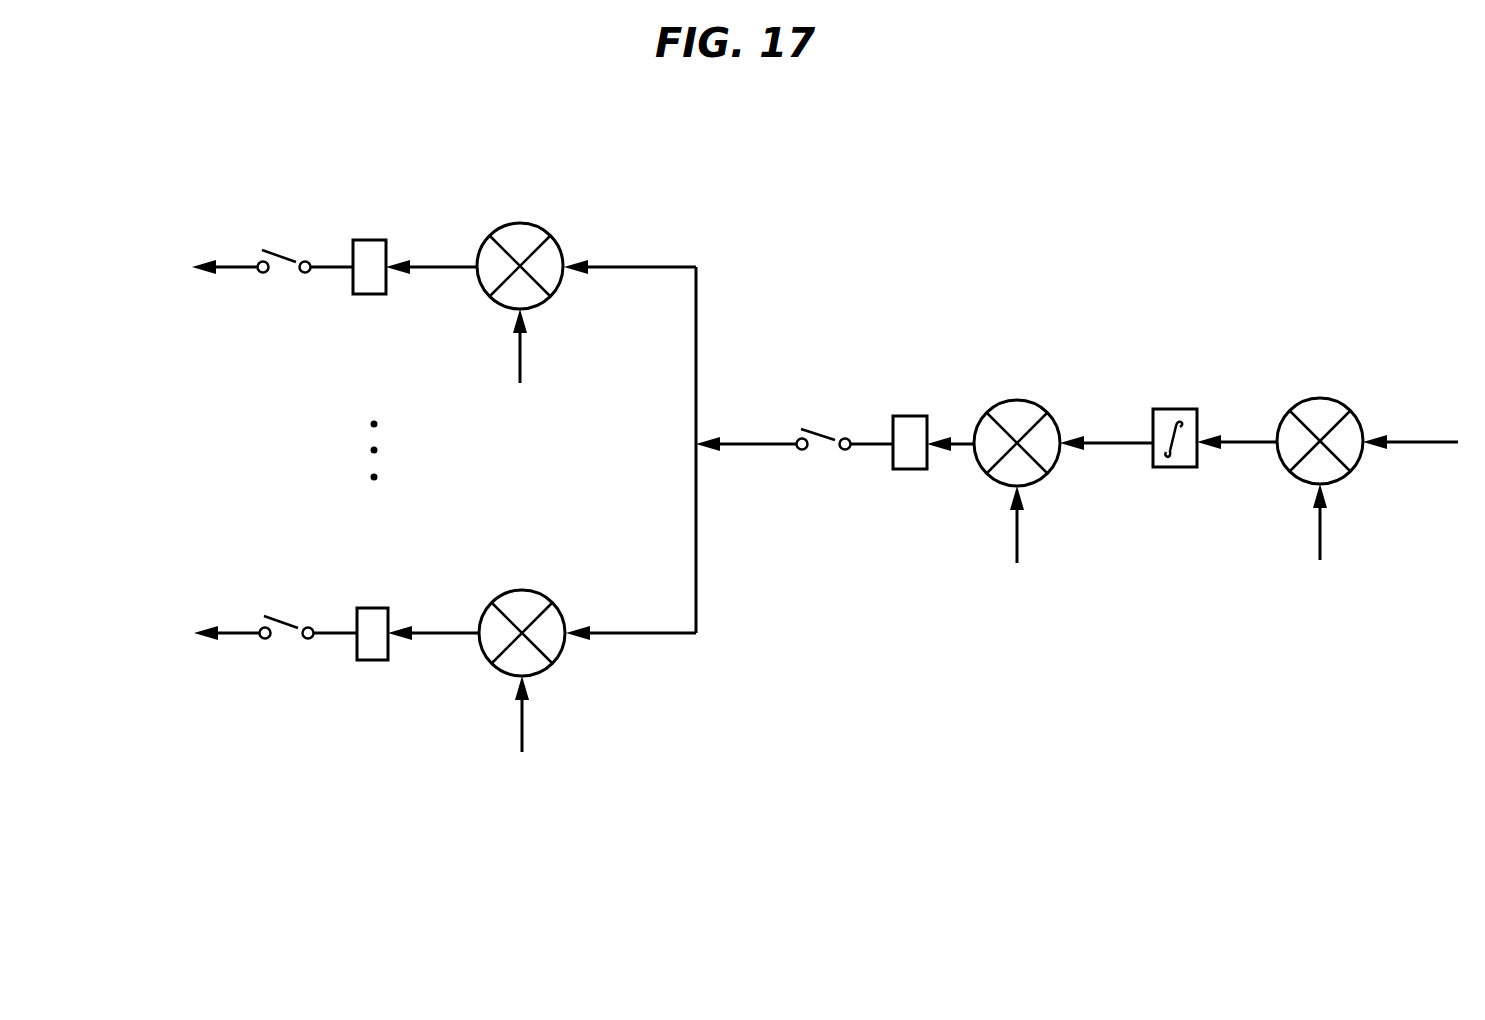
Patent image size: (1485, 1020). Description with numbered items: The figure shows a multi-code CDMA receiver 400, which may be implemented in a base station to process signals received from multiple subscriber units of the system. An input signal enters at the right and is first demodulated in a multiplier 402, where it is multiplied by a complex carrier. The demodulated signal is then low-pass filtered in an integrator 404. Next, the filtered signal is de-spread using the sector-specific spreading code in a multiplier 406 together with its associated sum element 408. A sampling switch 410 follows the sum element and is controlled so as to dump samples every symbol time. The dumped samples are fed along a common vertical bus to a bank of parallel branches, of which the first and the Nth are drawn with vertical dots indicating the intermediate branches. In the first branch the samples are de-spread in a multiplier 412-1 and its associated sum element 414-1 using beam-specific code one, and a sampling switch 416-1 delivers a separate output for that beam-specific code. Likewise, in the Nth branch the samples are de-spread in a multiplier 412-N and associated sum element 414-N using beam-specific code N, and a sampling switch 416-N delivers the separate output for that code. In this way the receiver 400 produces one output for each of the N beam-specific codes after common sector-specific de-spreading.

The multi-code CDMA receiver 400 is at (955, 180).
The multiplier 402 is at (1362, 457).
The integrator 404 is at (1175, 467).
The multiplier 406 is at (1059, 463).
The sum element 408 is at (910, 469).
The sampling switch 410 is at (825, 442).
The multiplier 412-1 is at (562, 286).
The sum element 414-1 is at (370, 294).
The sampling switch 416-1 is at (287, 264).
The multiplier 412-N is at (564, 653).
The sum element 414-N is at (372, 660).
The sampling switch 416-N is at (290, 630).